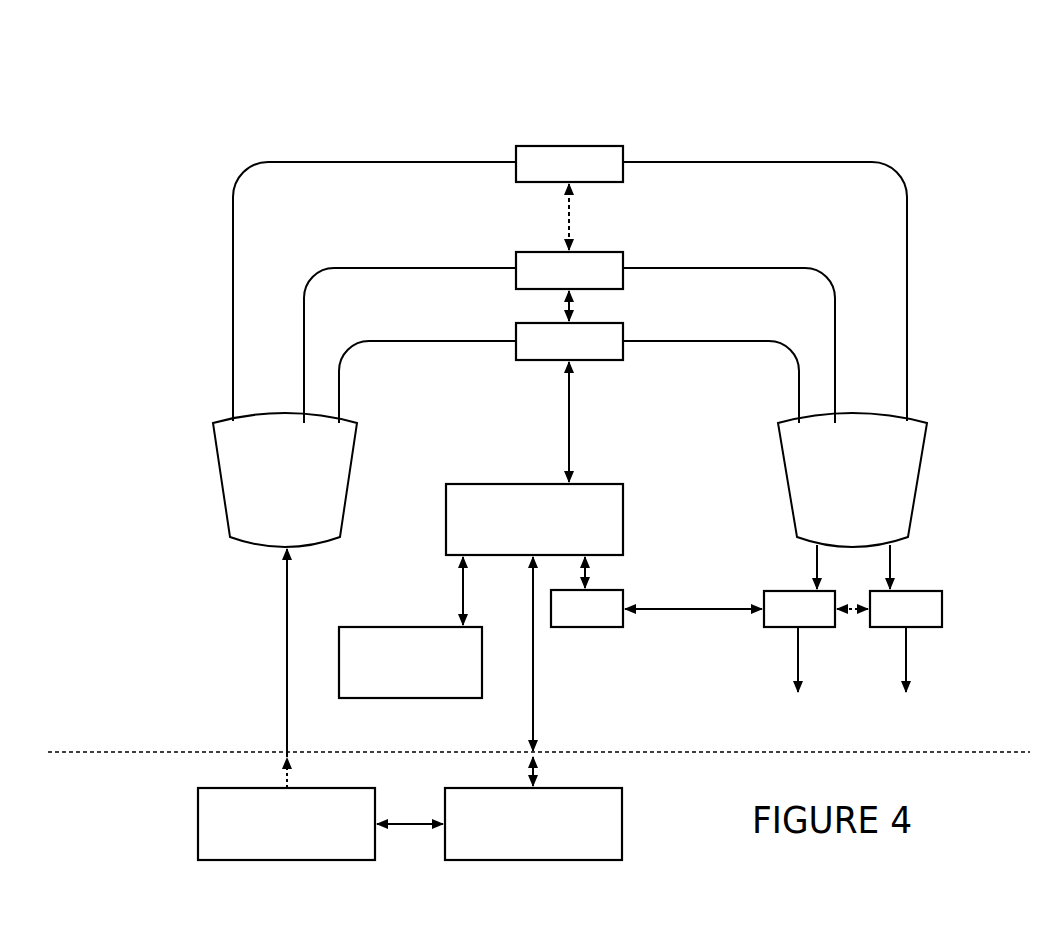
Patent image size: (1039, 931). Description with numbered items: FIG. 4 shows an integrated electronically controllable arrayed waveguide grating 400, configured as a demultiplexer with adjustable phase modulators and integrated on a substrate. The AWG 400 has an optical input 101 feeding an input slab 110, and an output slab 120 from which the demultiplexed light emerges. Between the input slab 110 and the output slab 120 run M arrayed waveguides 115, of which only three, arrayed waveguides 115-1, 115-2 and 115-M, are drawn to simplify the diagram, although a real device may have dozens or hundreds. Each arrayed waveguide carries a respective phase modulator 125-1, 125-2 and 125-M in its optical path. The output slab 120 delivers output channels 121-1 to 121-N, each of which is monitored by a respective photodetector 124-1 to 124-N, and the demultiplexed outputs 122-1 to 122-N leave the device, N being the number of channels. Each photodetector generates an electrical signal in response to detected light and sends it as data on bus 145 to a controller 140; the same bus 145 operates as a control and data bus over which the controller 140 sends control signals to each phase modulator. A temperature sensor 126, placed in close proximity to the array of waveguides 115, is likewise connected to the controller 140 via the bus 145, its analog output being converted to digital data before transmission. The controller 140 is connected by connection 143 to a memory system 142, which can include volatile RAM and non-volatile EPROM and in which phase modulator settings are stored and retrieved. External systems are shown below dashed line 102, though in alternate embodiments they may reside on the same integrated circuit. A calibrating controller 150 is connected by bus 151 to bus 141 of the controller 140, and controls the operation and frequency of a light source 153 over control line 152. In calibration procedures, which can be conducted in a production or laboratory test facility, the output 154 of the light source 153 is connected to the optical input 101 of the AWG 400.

The arrayed waveguide grating 400 is at (195, 637).
The optical input 101 is at (283, 578).
The dashed line 102 is at (182, 751).
The input slab 110 is at (285, 480).
The arrayed waveguides 115 is at (385, 415).
The arrayed waveguide 115-1 is at (402, 343).
The arrayed waveguide 115-2 is at (366, 269).
The arrayed waveguide 115-M is at (313, 163).
The output slab 120 is at (852, 480).
The output channel 121-1 is at (813, 563).
The output channel 121-N is at (895, 572).
The demultiplexed output 122-1 is at (802, 695).
The demultiplexed output 122-N is at (908, 695).
The photodetector 124-1 is at (763, 627).
The photodetector 124-N is at (942, 627).
The phase modulator 125-1 is at (624, 323).
The phase modulator 125-2 is at (622, 252).
The phase modulator 125-M is at (624, 182).
The temperature sensor 126 is at (623, 627).
The controller 140 is at (516, 483).
The bus 141 is at (530, 708).
The memory system 142 is at (373, 625).
The connection 143 is at (458, 587).
The bus 145 is at (675, 607).
The calibrating controller 150 is at (623, 823).
The bus 151 is at (570, 771).
The control line 152 is at (403, 822).
The light source 153 is at (197, 822).
The output 154 is at (280, 780).